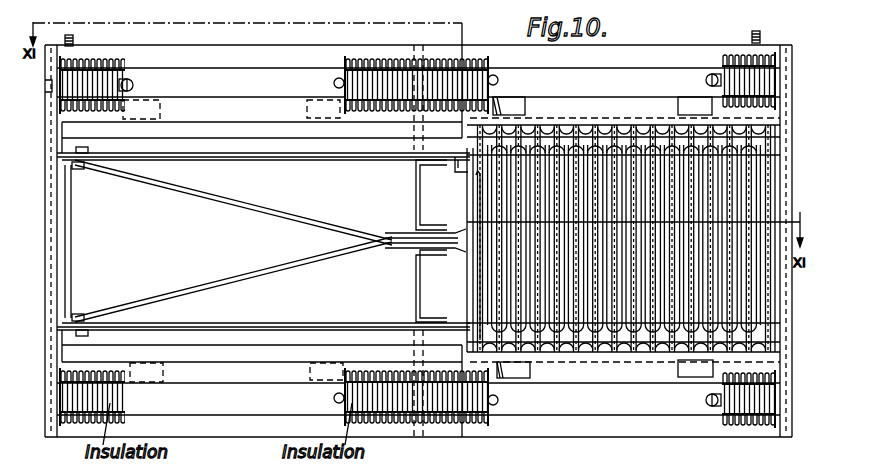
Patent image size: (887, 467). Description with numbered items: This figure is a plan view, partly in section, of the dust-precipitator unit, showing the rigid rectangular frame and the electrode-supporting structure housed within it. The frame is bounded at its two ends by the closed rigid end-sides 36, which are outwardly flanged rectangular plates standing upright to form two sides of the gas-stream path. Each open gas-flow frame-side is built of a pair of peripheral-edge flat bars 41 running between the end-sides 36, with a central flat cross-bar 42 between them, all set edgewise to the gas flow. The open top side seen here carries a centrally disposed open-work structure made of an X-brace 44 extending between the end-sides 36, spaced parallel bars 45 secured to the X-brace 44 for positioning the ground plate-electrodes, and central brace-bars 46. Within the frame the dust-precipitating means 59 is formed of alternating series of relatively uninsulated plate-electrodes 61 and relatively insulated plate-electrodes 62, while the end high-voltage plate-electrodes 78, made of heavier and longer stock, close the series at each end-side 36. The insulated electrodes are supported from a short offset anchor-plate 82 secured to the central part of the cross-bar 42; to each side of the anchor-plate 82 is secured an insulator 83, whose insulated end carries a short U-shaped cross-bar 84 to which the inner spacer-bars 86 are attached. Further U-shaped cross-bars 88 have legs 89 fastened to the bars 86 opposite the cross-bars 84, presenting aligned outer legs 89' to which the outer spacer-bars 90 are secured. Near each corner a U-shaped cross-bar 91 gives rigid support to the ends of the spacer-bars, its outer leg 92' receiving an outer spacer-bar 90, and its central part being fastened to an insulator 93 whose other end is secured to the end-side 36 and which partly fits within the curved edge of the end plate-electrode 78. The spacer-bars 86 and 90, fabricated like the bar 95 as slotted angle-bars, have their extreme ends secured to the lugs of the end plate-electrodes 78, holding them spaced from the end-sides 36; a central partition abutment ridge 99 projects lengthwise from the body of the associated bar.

The end-side 36 is at (52, 165).
The peripheral-edge flat bar 41 is at (193, 51).
The central flat cross-bar 42 is at (428, 437).
The X-brace 44 is at (397, 235).
The spaced parallel bar 45 is at (373, 161).
The central brace-bar 46 is at (426, 193).
The dust-precipitating means 59 is at (478, 298).
The uninsulated plate-electrode 61 is at (742, 165).
The insulated plate-electrode 62 is at (737, 192).
The end high-voltage plate-electrode 78 is at (776, 147).
The anchor-plate 82 is at (414, 52).
The insulator 83 is at (343, 74).
The U-shaped cross-bar 84 is at (305, 84).
The inner spacer-bar 86 is at (601, 99).
The U-shaped cross-bar 88 is at (500, 110).
The leg 89 is at (525, 106).
The outer leg 89' is at (296, 110).
The outer spacer-bar 90 is at (236, 103).
The U-shaped cross-bar 91 is at (136, 80).
The outer leg 92' is at (162, 241).
The insulator 93 is at (120, 63).
The bar 95 is at (770, 135).
The central partition abutment ridge 99 is at (472, 158).